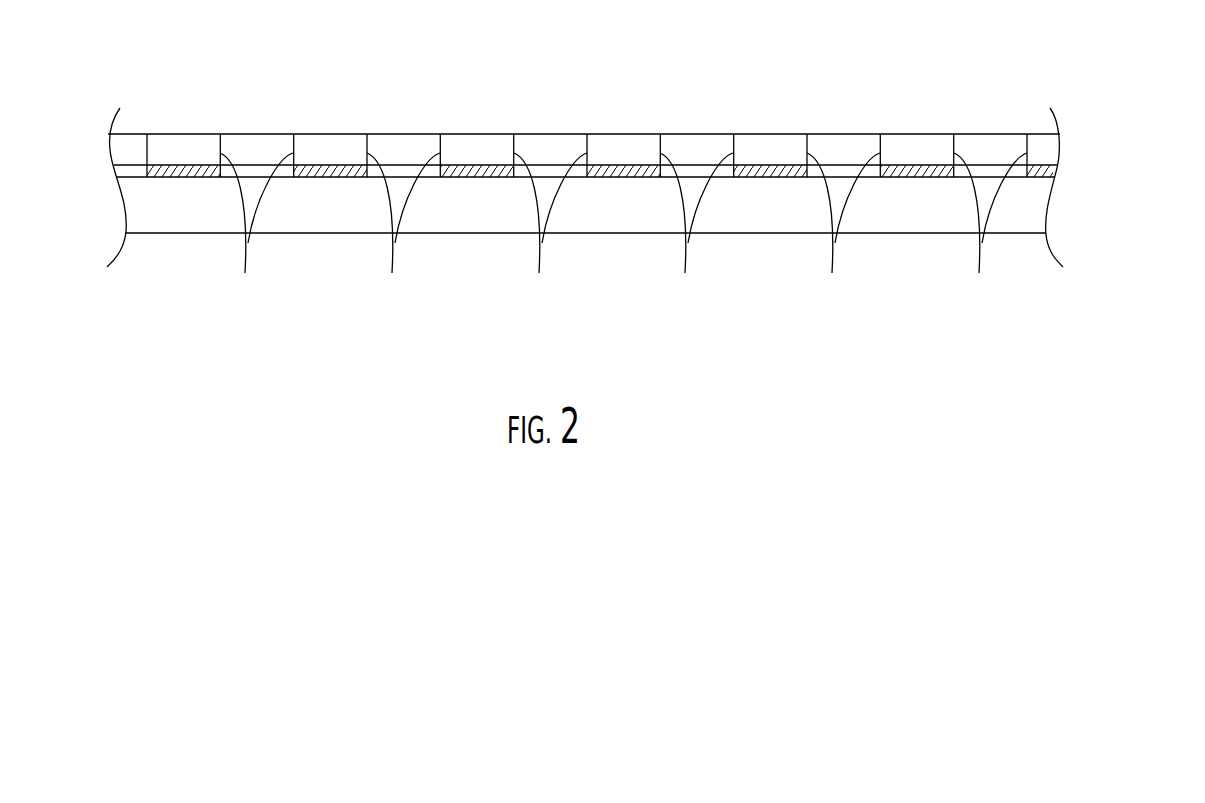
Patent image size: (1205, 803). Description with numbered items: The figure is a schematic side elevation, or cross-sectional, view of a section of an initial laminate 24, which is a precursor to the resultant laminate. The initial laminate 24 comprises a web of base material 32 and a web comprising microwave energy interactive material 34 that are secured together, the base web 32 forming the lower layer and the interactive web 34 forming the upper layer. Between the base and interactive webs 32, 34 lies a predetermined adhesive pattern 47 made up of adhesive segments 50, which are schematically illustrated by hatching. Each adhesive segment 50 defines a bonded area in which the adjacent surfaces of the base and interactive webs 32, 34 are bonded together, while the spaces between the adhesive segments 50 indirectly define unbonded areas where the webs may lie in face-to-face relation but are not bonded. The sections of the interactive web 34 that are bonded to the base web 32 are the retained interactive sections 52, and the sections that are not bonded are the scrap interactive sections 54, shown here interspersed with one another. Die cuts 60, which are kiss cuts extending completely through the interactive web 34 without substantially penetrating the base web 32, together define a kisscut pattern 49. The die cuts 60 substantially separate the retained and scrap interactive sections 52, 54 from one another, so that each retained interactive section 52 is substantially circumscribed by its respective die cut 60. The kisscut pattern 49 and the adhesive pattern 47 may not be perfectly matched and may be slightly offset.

The initial laminate 24 is at (277, 352).
The web of base material 32 is at (791, 228).
The web comprising microwave energy interactive material 34 is at (1049, 151).
The adhesive pattern 47 is at (1055, 170).
The kisscut pattern 49 is at (132, 142).
The adhesive segments 50 is at (171, 180).
The retained interactive sections 52 is at (185, 148).
The scrap interactive sections 54 is at (257, 148).
The die cuts 60 is at (145, 150).